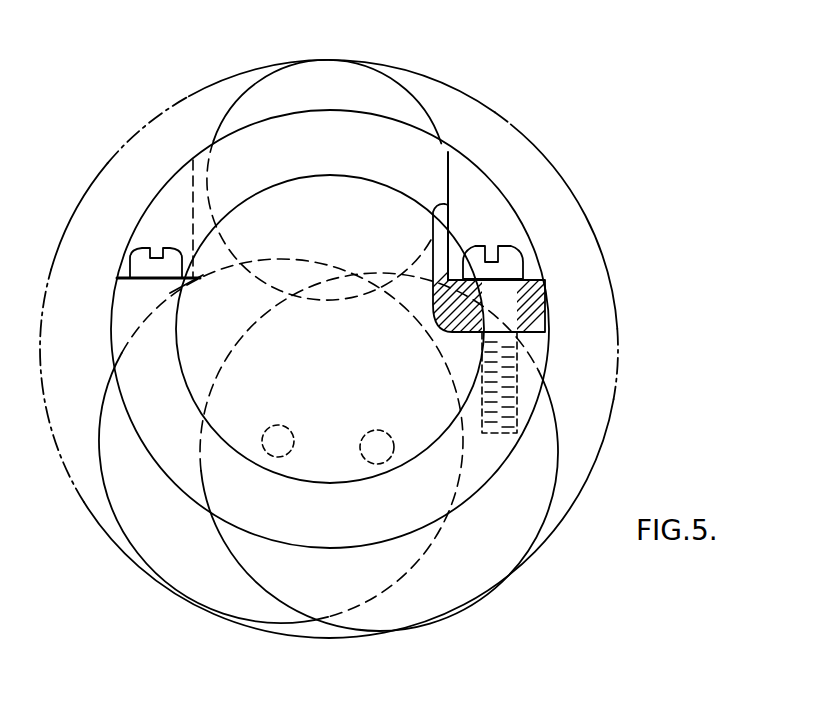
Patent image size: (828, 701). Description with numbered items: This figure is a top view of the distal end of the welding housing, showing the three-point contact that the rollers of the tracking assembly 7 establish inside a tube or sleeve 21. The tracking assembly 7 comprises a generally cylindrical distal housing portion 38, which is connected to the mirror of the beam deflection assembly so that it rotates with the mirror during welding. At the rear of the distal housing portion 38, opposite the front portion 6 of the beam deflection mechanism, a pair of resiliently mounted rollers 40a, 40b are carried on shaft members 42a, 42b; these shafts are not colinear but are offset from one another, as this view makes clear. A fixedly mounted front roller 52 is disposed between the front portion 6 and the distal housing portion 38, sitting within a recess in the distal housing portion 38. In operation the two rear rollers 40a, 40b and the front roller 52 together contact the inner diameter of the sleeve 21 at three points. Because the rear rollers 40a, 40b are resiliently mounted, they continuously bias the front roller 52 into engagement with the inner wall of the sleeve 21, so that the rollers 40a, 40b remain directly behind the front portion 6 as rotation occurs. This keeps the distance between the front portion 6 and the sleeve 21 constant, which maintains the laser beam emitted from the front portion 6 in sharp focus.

The front portion 6 is at (312, 55).
The tracking assembly 7 is at (552, 152).
The sleeve 21 is at (582, 216).
The distal housing portion 38 is at (527, 247).
The resiliently mounted roller 40a is at (172, 550).
The resiliently mounted roller 40b is at (463, 583).
The shaft member 42a is at (289, 427).
The shaft member 42b is at (411, 428).
The front roller 52 is at (371, 83).